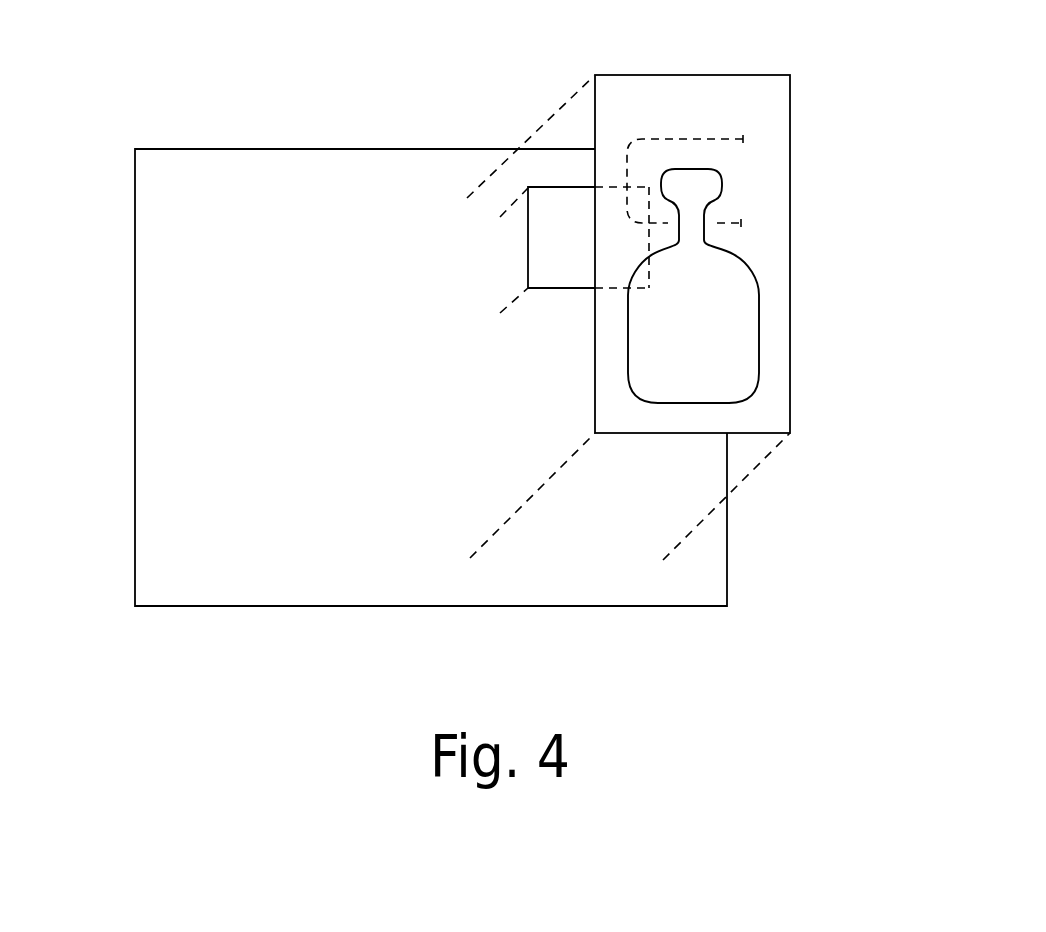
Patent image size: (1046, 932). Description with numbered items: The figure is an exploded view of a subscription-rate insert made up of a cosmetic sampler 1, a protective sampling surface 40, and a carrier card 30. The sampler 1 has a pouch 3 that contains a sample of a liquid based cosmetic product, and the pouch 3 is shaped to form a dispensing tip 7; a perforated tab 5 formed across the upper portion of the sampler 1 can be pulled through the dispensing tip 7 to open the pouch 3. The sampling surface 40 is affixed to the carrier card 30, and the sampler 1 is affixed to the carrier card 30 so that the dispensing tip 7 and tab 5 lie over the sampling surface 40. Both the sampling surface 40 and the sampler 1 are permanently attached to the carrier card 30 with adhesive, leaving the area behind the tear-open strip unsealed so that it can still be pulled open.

The sampler 1 is at (818, 361).
The pouch 3 is at (751, 286).
The tab 5 is at (722, 120).
The dispensing tip 7 is at (767, 119).
The carrier card 30 is at (385, 377).
The sampling surface 40 is at (528, 242).